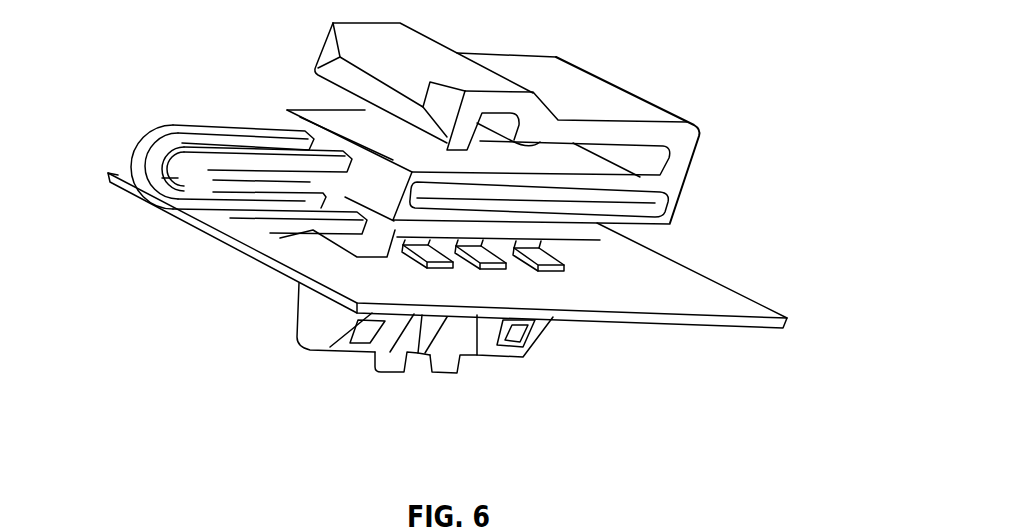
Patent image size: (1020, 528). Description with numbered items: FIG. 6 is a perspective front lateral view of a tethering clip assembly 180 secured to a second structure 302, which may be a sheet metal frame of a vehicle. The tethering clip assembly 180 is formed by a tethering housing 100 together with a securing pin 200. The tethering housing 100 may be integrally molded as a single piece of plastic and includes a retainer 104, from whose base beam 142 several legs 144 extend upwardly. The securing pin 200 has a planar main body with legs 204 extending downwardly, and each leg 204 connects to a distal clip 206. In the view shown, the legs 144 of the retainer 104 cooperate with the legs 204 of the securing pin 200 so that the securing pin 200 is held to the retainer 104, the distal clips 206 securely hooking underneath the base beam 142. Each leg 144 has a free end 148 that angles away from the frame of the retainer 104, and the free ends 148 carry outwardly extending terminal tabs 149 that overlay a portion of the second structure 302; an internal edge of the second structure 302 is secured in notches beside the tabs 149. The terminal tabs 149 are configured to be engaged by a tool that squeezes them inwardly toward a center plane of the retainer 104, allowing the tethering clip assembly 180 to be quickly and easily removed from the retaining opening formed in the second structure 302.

The tethering housing 100 is at (581, 60).
The tethering clip assembly 180 is at (707, 86).
The free end 148 is at (562, 258).
The terminal tabs 149 is at (425, 266).
The second structure 302 is at (700, 300).
The retainer 104 is at (327, 350).
The legs 144 is at (383, 372).
The distal clip 206 is at (397, 372).
The base beam 142 is at (422, 357).
The legs 204 is at (460, 372).
The securing pin 200 is at (475, 357).